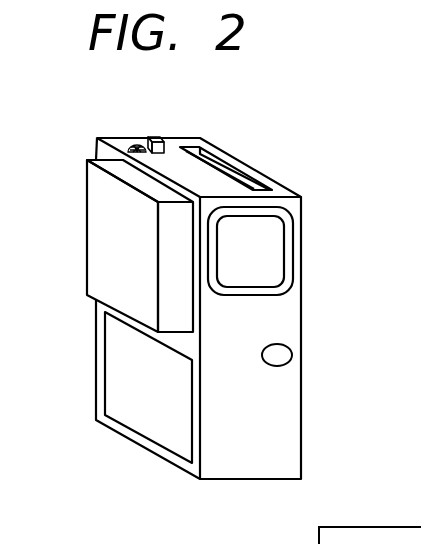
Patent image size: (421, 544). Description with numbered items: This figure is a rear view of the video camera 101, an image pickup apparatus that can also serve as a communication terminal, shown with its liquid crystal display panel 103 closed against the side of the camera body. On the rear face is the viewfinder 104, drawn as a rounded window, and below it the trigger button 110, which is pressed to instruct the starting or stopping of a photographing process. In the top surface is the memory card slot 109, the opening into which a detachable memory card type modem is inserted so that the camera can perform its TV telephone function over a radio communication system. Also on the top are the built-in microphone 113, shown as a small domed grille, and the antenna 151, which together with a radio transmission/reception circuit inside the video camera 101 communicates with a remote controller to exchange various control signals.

The video camera 101 is at (232, 129).
The liquid crystal display panel 103 is at (98, 220).
The viewfinder 104 is at (292, 237).
The memory card slot 109 is at (240, 165).
The trigger button 110 is at (292, 352).
The built-in microphone 113 is at (130, 135).
The antenna 151 is at (166, 127).